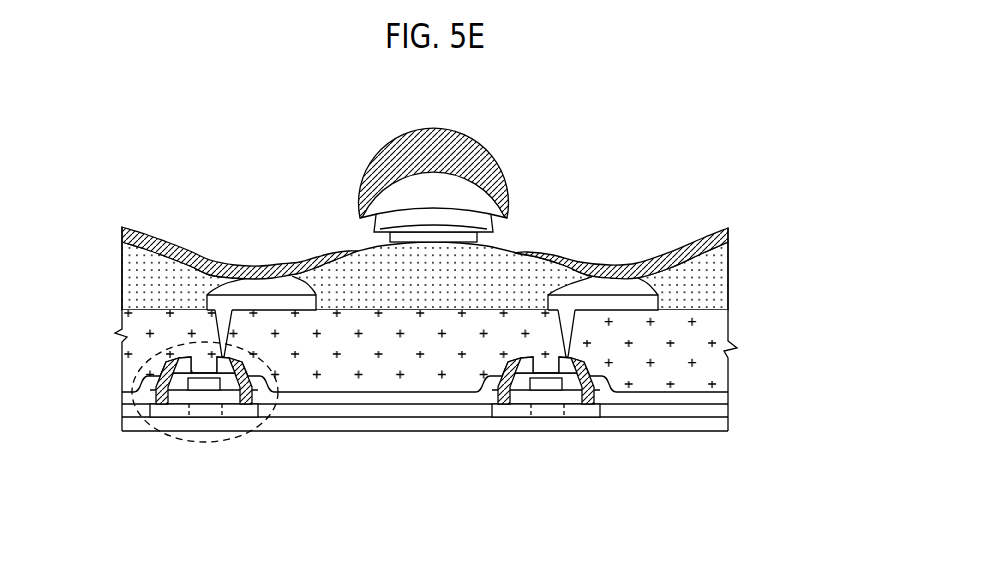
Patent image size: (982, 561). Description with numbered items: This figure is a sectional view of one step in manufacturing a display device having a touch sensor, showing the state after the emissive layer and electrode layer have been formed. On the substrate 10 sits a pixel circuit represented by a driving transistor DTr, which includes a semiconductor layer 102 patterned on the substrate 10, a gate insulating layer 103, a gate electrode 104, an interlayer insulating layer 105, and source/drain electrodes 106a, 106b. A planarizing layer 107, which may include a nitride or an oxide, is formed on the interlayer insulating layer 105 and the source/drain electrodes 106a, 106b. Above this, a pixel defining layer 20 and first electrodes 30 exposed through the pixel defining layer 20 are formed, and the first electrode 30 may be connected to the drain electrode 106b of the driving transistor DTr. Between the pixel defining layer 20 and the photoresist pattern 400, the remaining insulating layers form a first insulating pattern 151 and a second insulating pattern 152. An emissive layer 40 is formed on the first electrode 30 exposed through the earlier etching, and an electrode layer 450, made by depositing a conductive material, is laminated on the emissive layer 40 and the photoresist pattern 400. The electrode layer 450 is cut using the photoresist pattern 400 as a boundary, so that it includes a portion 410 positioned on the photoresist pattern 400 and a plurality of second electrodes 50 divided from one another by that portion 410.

The substrate 10 is at (121, 425).
The semiconductor layer 102 is at (194, 410).
The gate insulating layer 103 is at (129, 409).
The gate electrode 104 is at (207, 385).
The interlayer insulating layer 105 is at (141, 383).
The source electrode 106a is at (178, 363).
The drain electrode 106b is at (246, 366).
The planarizing layer 107 is at (121, 320).
The driving transistor DTr is at (165, 350).
The pixel defining layer 20 is at (458, 287).
The first electrode 30 is at (280, 303).
The emissive layer 40 is at (247, 285).
The second electrode 50 is at (273, 265).
The first insulating pattern 151 is at (415, 237).
The second insulating pattern 152 is at (393, 223).
The photoresist pattern 400 is at (440, 173).
The portion positioned on the photoresist pattern 410 is at (432, 157).
The electrode layer 450 is at (434, 154).